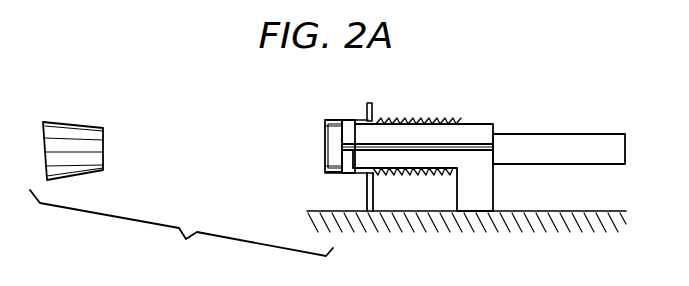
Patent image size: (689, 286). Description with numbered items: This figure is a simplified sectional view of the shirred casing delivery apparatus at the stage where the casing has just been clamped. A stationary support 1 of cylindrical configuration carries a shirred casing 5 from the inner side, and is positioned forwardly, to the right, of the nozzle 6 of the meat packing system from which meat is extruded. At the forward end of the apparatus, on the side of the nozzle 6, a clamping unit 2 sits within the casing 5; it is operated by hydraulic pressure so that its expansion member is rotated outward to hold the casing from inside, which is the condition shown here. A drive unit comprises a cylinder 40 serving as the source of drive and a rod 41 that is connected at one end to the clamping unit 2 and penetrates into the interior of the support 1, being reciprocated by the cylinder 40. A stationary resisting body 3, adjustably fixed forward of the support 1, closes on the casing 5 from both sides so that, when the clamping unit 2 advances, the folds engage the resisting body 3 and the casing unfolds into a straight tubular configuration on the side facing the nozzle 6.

The stationary support 1 is at (417, 124).
The clamping unit 2 is at (330, 142).
The stationary resisting body 3 is at (372, 113).
The shirred casing 5 is at (433, 119).
The nozzle 6 is at (73, 143).
The cylinder 40 is at (573, 143).
The rod 41 is at (472, 145).